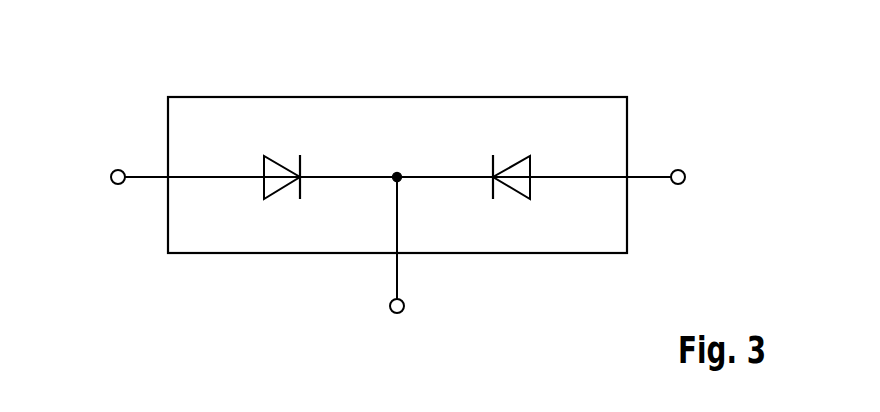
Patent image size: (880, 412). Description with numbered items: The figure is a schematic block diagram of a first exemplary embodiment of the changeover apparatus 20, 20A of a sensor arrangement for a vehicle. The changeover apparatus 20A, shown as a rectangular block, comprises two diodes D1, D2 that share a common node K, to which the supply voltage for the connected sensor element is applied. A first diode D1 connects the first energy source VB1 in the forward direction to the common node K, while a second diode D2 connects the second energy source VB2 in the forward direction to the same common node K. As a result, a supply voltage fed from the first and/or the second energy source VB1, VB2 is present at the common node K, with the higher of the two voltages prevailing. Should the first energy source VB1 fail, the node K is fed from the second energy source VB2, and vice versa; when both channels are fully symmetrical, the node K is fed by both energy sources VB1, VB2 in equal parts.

The changeover apparatus 20 is at (268, 97).
The changeover apparatus 20A is at (397, 175).
The first diode D1 is at (282, 164).
The second diode D2 is at (511, 165).
The common node K is at (397, 172).
The first energy source VB1 is at (686, 177).
The second energy source VB2 is at (109, 176).